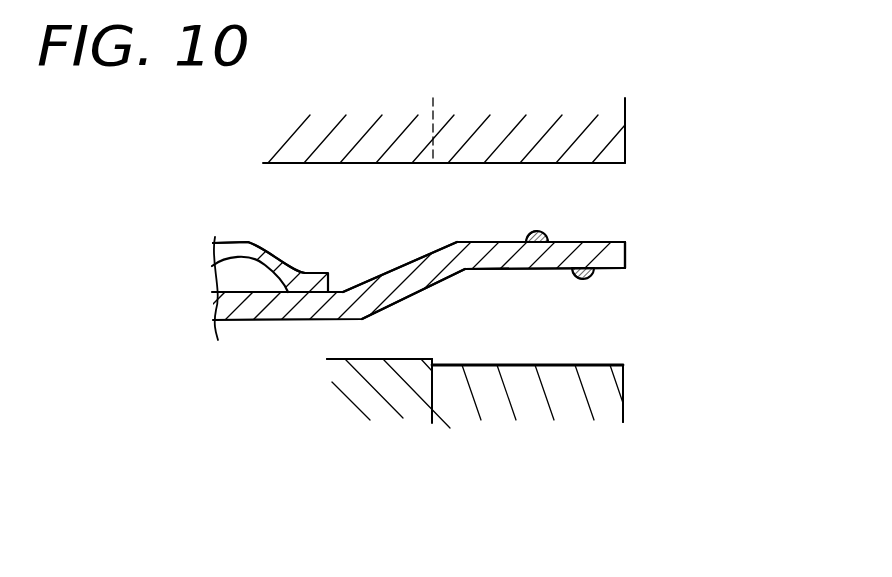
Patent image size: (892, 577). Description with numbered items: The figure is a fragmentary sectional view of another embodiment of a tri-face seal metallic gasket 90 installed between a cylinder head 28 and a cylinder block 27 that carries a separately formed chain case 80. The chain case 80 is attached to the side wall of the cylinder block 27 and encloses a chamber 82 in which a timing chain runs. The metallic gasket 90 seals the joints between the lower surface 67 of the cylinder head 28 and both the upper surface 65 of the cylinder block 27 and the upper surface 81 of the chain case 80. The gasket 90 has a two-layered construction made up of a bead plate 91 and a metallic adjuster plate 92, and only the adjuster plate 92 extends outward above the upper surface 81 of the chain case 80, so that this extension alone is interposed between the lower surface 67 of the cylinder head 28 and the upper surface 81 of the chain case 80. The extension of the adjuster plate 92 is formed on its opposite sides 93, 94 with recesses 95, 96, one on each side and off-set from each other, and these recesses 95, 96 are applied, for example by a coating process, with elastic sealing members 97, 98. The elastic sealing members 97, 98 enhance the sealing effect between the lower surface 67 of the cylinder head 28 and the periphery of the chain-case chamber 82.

The cylinder block 27 is at (392, 390).
The cylinder head 28 is at (597, 133).
The upper surface of the cylinder block 65 is at (377, 359).
The lower surface of the cylinder head 67 is at (577, 165).
The chain case 80 is at (550, 398).
The upper surface of the chain case 81 is at (570, 365).
The chamber 82 is at (623, 400).
The metallic gasket 90 is at (236, 213).
The bead plate 91 is at (267, 252).
The adjuster plate 92 is at (423, 280).
The side of the adjuster plate extension 93 is at (604, 242).
The side of the adjuster plate extension 94 is at (613, 270).
The recess 95 is at (545, 234).
The recess 96 is at (585, 275).
The elastic sealing member 97 is at (532, 237).
The elastic sealing member 98 is at (572, 275).